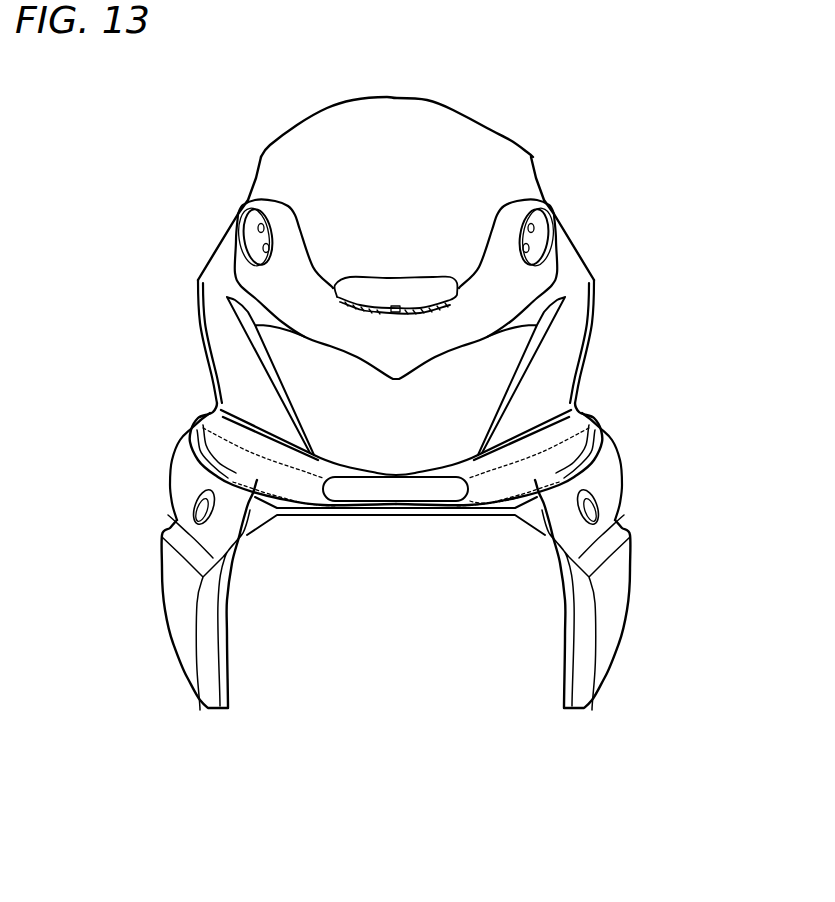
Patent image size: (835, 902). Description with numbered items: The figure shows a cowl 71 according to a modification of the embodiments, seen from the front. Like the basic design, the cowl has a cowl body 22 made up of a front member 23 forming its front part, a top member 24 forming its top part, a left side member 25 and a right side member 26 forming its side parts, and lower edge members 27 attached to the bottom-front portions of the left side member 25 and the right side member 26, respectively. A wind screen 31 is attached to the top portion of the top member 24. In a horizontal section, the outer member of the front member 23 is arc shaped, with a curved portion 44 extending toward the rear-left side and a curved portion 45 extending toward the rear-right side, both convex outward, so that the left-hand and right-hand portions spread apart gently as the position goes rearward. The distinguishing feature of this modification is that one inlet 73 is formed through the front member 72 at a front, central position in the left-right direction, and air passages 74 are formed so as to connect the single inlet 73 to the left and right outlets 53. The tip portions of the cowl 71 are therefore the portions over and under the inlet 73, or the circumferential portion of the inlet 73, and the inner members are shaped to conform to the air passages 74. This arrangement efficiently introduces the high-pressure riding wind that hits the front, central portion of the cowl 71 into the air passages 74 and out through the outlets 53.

The cowl body 22 is at (199, 268).
The front member 23 is at (317, 550).
The top member 24 is at (500, 223).
The left side member 25 is at (576, 347).
The right side member 26 is at (216, 347).
The lower edge member 27 is at (228, 637).
The wind screen 31 is at (397, 97).
The curved portion 44 is at (542, 486).
The curved portion 45 is at (250, 486).
The outlet 53 is at (196, 428).
The cowl 71 is at (206, 184).
The front member 72 is at (430, 524).
The inlet 73 is at (363, 495).
The air passage 74 is at (492, 493).